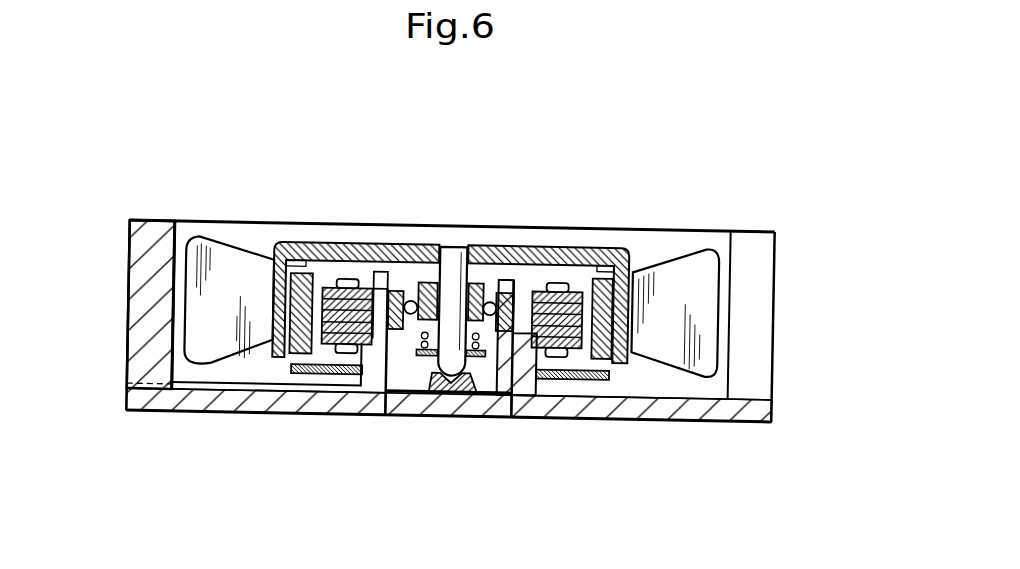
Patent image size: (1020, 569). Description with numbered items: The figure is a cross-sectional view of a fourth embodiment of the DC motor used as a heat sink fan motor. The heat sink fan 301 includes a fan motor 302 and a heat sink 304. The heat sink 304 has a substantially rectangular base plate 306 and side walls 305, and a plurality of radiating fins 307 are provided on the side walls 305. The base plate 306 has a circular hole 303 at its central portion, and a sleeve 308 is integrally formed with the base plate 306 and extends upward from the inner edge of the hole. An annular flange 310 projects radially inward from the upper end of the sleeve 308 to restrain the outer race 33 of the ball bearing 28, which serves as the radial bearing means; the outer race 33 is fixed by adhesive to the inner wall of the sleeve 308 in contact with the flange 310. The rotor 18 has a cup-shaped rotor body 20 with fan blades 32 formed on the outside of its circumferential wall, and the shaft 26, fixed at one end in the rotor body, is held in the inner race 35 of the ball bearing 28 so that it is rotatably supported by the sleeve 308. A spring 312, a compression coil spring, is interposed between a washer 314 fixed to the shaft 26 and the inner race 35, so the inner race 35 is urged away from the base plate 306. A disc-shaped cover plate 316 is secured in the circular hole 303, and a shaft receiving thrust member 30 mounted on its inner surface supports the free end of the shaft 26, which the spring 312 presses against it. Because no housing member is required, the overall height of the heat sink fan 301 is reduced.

The rotor 18 is at (667, 248).
The rotor body 20 is at (263, 246).
The shaft 26 is at (451, 247).
The ball bearing 28 is at (480, 270).
The shaft receiving member 30 is at (464, 394).
The fan blades 32 is at (206, 356).
The outer race 33 is at (371, 273).
The inner race 35 is at (427, 282).
The heat sink fan 301 is at (678, 421).
The fan motor 302 is at (600, 241).
The circular hole 303 is at (511, 395).
The heat sink 304 is at (249, 423).
The side walls 305 is at (127, 256).
The base plate 306 is at (325, 412).
The radiating fins 307 is at (765, 348).
The sleeve 308 is at (517, 281).
The annular flange 310 is at (387, 253).
The spring 312 is at (422, 339).
The washer 314 is at (424, 356).
The cover plate 316 is at (494, 417).